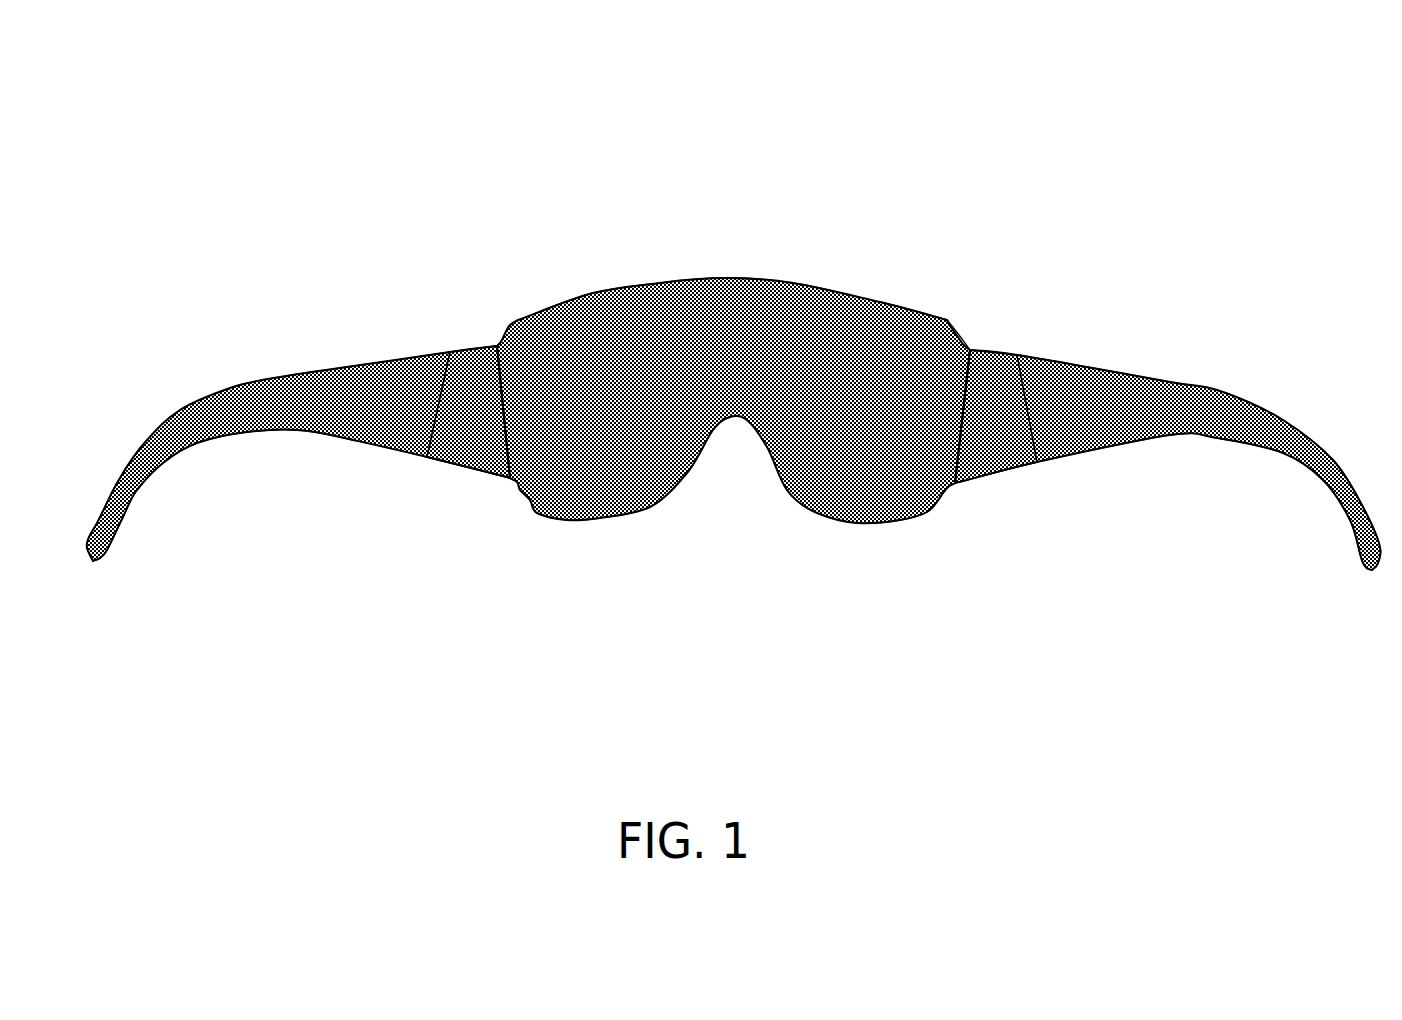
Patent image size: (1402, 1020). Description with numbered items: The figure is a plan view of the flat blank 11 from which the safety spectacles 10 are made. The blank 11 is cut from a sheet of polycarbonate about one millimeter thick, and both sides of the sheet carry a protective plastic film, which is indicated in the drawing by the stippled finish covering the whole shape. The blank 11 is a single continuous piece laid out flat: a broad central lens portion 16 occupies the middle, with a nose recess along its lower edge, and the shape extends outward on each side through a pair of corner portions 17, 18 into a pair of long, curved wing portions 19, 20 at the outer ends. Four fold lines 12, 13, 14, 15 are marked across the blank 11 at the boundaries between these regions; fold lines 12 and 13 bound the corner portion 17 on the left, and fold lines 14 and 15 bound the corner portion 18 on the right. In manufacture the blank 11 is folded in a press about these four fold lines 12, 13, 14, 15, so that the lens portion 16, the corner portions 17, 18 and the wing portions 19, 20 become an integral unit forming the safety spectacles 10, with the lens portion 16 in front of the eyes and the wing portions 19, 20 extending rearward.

The safety spectacles 10 is at (1245, 175).
The blank 11 is at (970, 330).
The fold line 12 is at (430, 425).
The fold line 13 is at (503, 437).
The fold line 14 is at (960, 448).
The fold line 15 is at (1033, 427).
The lens portion 16 is at (794, 368).
The corner portion 17 is at (480, 393).
The corner portion 18 is at (980, 375).
The wing portion 19 is at (277, 413).
The wing portion 20 is at (1188, 402).